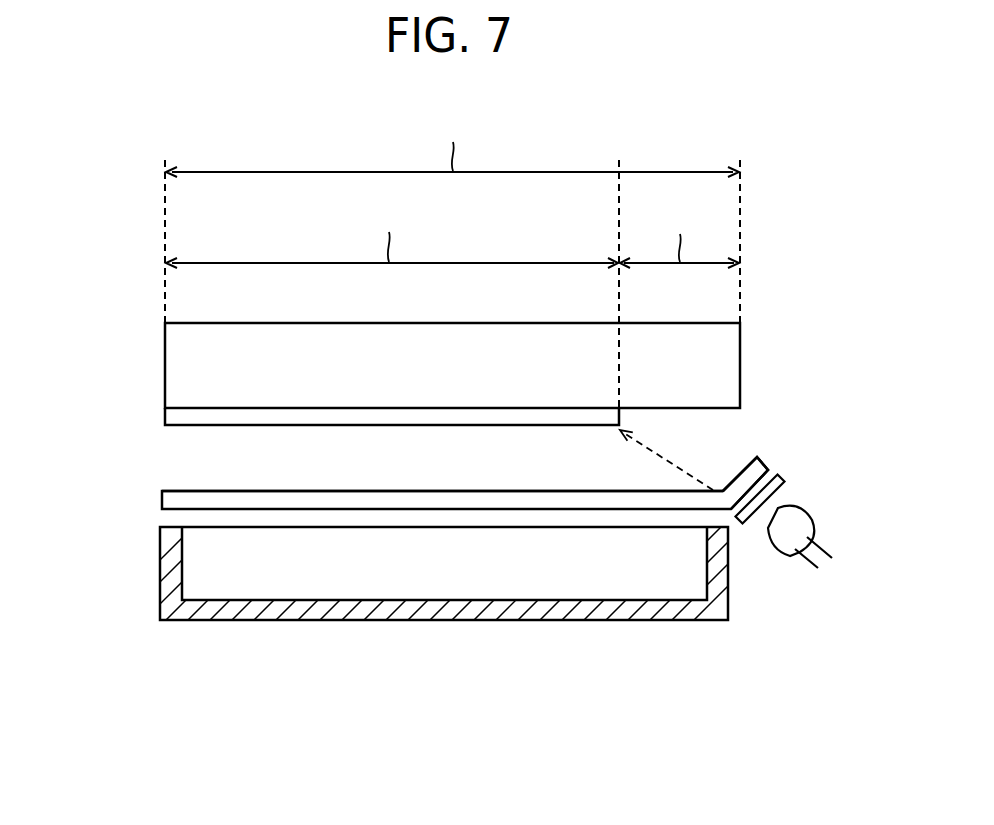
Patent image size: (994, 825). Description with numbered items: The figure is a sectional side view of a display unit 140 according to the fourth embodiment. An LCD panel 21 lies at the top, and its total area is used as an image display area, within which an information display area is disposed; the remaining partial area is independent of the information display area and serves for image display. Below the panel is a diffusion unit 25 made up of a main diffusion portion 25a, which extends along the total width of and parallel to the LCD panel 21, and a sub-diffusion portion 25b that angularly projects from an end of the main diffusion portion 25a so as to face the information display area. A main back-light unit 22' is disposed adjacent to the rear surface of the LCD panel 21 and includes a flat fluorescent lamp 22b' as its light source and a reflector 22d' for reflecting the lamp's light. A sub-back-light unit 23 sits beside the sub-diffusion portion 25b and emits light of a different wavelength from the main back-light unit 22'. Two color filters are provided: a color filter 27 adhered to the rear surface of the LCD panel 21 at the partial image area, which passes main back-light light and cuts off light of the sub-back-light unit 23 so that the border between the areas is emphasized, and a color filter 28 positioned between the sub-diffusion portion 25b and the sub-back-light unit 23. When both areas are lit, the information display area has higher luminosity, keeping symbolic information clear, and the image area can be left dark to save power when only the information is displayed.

The display unit 140 is at (777, 108).
The LCD panel 21 is at (742, 368).
The color filter 27 is at (163, 412).
The diffusion unit 25 is at (458, 491).
The main diffusion portion 25a is at (185, 497).
The sub-diffusion portion 25b is at (737, 470).
The color filter 28 is at (790, 481).
The sub-back-light unit 23 is at (778, 548).
The main back-light unit 22' is at (443, 631).
The flat fluorescent lamp 22b' is at (444, 606).
The reflector 22d' is at (443, 606).